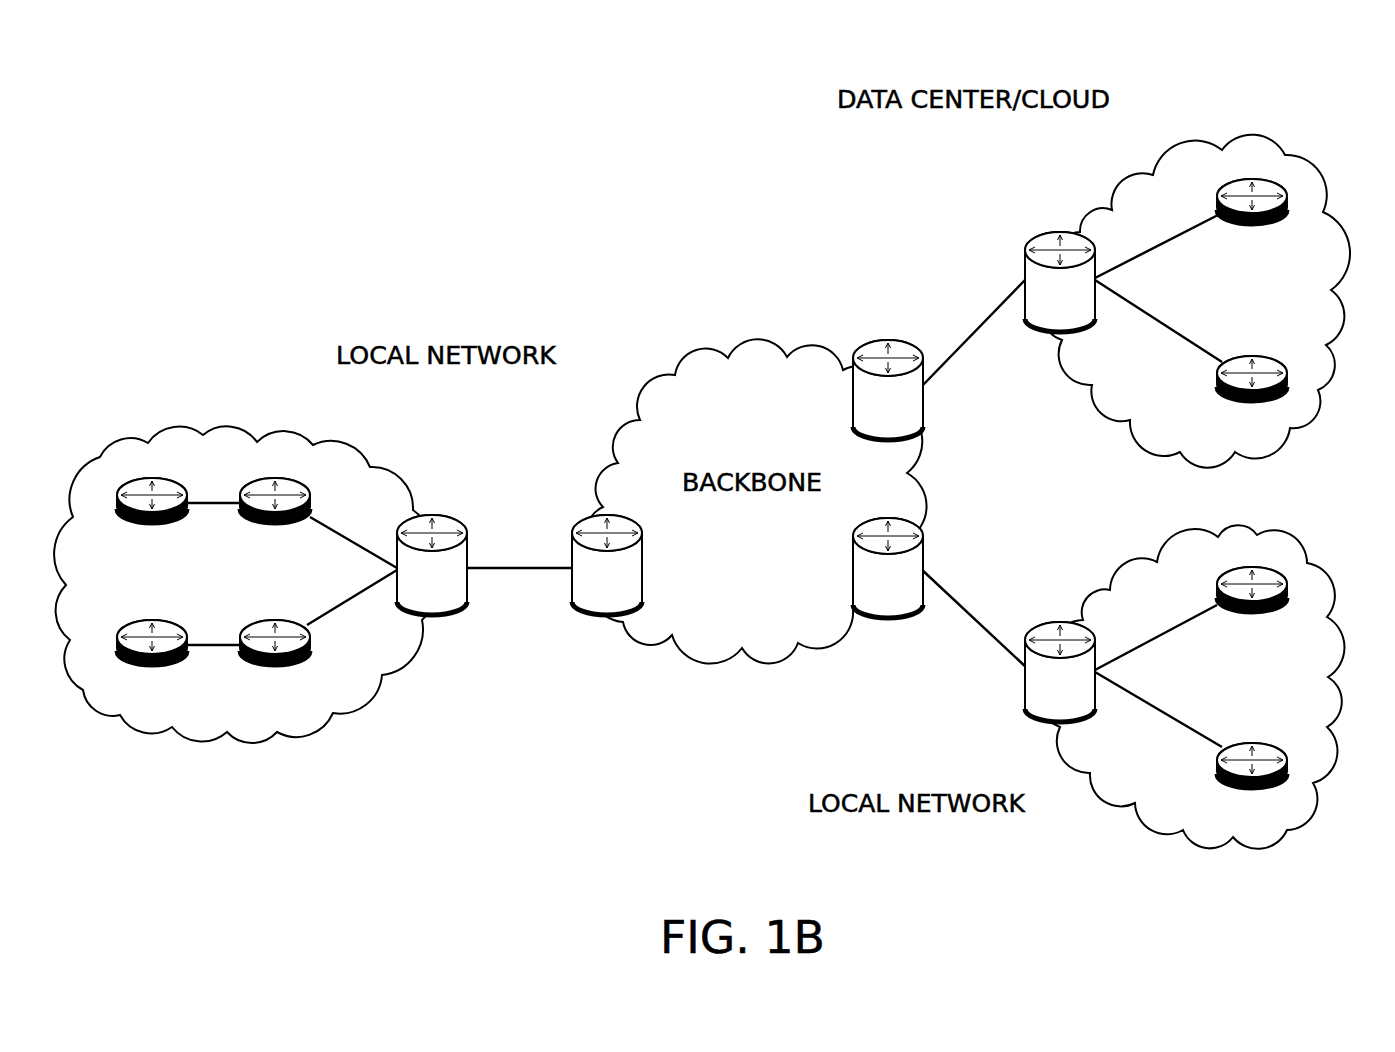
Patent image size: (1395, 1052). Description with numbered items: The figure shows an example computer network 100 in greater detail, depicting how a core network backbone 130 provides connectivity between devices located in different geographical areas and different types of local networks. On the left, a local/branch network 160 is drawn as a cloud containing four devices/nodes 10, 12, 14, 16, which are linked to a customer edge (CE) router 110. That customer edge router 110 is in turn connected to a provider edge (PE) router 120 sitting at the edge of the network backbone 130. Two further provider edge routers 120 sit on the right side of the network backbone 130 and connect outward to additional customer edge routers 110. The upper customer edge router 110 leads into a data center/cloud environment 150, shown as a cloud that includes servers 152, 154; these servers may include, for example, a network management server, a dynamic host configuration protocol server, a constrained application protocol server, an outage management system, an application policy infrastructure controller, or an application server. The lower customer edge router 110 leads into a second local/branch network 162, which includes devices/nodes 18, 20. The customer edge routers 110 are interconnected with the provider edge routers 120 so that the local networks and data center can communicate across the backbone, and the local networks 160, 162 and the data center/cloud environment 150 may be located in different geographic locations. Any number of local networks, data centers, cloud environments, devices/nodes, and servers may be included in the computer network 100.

The device/node 10 is at (152, 518).
The device/node 12 is at (275, 518).
The device/node 14 is at (152, 660).
The device/node 16 is at (275, 660).
The device/node 18 is at (1252, 783).
The device/node 20 is at (1252, 607).
The computer network 100 is at (1292, 73).
The customer edge (CE) router 110 is at (415, 605).
The provider edge (PE) router 120 is at (590, 605).
The network backbone 130 is at (734, 525).
The data center/cloud environment 150 is at (1150, 158).
The server 152 is at (1252, 220).
The server 154 is at (1252, 396).
The local/branch network 160 is at (290, 415).
The local/branch network 162 is at (1077, 784).